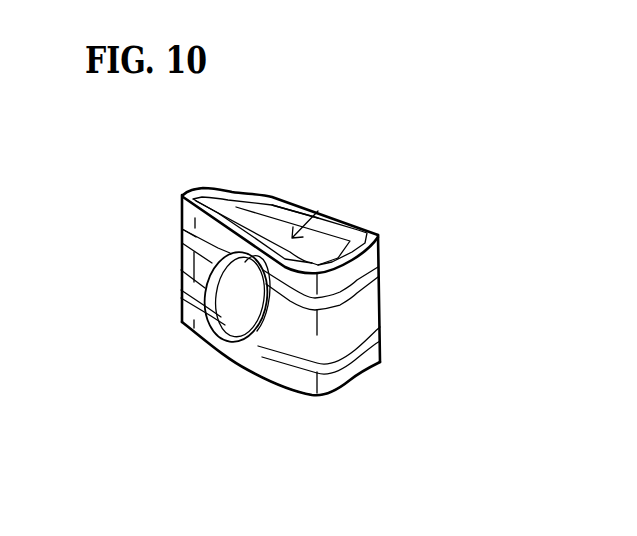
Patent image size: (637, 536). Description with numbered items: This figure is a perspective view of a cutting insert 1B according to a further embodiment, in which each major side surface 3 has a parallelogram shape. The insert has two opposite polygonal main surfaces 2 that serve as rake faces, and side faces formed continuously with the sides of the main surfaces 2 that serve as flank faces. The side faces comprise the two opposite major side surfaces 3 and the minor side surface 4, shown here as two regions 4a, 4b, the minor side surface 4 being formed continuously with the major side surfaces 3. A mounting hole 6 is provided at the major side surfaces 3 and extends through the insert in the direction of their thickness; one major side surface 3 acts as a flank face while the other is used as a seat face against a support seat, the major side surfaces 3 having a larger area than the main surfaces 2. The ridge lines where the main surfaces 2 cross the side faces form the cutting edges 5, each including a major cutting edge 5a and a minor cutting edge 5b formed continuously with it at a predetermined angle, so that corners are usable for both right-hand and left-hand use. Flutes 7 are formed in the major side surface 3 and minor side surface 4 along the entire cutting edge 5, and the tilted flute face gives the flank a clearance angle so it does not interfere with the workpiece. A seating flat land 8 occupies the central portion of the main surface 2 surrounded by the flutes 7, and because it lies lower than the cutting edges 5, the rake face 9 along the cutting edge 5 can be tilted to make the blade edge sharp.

The cutting insert 1B is at (386, 306).
The main surface 2 is at (316, 248).
The major side surface 3 is at (266, 336).
The minor side surface 4 is at (336, 453).
The first flank portion 4a is at (340, 340).
The second flank portion 4b is at (282, 340).
The cutting edge 5 is at (88, 152).
The major cutting edge 5a is at (182, 231).
The minor cutting edge 5b is at (182, 203).
The mounting hole 6 is at (216, 298).
The flute 7 is at (388, 250).
The seating flat land 8 is at (326, 248).
The rake face 9 is at (290, 203).